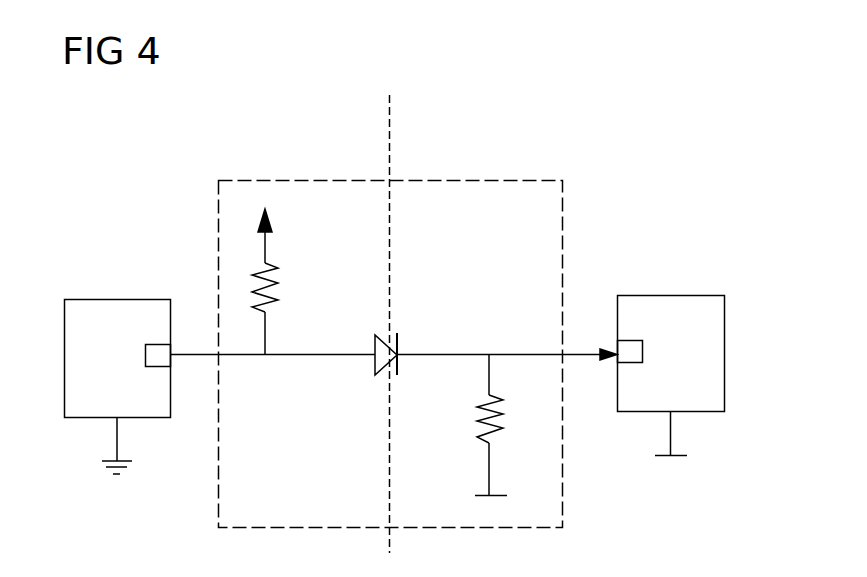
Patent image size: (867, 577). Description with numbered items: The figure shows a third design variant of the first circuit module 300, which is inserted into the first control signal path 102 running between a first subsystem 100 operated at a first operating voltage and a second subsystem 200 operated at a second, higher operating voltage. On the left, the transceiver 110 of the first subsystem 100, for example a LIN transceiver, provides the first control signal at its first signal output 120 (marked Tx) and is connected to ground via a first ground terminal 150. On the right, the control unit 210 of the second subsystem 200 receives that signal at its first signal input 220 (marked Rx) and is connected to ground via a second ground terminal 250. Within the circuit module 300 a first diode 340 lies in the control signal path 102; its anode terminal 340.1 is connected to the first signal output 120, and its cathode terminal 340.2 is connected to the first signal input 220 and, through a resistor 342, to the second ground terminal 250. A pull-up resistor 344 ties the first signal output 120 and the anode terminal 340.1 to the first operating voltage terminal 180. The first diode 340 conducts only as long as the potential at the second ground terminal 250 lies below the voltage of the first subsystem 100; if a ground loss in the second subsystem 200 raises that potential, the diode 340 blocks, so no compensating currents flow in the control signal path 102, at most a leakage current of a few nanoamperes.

The first subsystem 100 is at (205, 130).
The second subsystem 200 is at (620, 130).
The first circuit module 300 is at (533, 214).
The transceiver 110 is at (65, 297).
The first signal output 120 is at (145, 347).
The first control signal path 102 is at (195, 352).
The first ground terminal 150 is at (115, 477).
The first operating voltage terminal 180 is at (268, 225).
The pull-up resistor 344 is at (278, 283).
The first diode 340 is at (393, 346).
The anode terminal 340.1 is at (376, 355).
The cathode terminal 340.2 is at (400, 353).
The resistor 342 is at (482, 425).
The second ground terminal 250 is at (480, 495).
The control unit 210 is at (675, 293).
The first signal input 220 is at (643, 340).